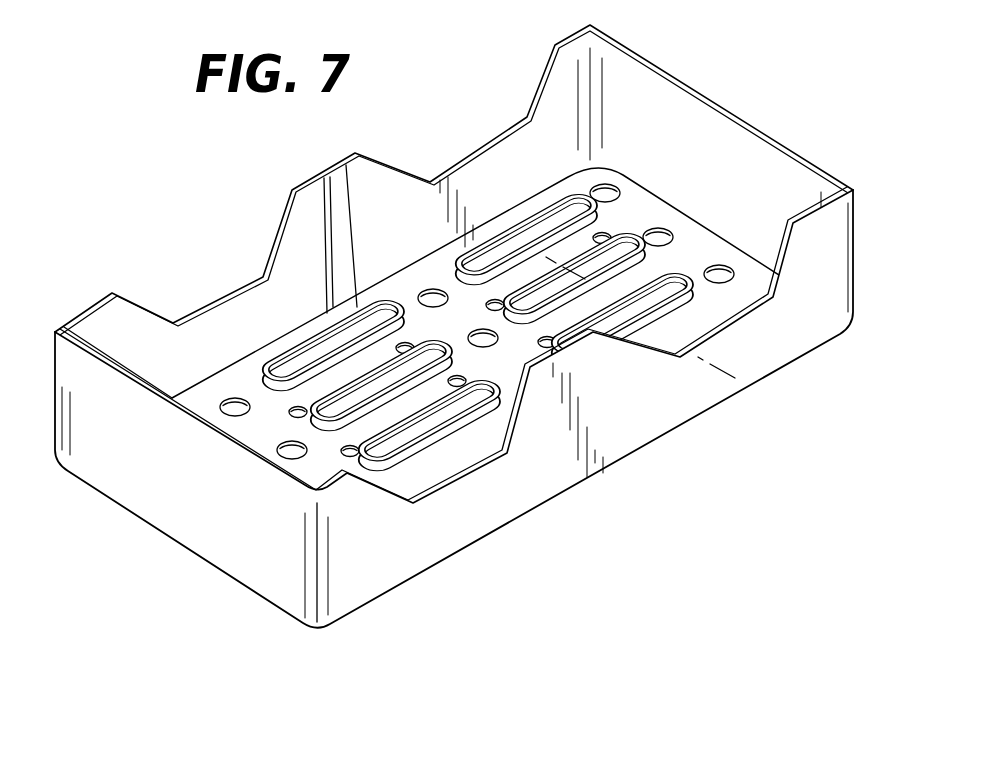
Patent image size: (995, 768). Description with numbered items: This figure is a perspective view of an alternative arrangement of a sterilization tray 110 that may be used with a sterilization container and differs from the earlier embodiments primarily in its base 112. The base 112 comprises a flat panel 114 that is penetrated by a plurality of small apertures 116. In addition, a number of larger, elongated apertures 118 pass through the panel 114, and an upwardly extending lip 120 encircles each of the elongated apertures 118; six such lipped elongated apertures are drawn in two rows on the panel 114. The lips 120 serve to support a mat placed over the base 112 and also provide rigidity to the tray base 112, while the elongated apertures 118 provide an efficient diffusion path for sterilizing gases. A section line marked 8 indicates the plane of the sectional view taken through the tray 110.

The tray 110 is at (454, 330).
The base 112 is at (684, 188).
The flat panel 114 is at (509, 321).
The apertures 116 is at (233, 397).
The elongated apertures 118 is at (288, 372).
The lip 120 is at (314, 345).
The section line 8- 8 is at (553, 268).